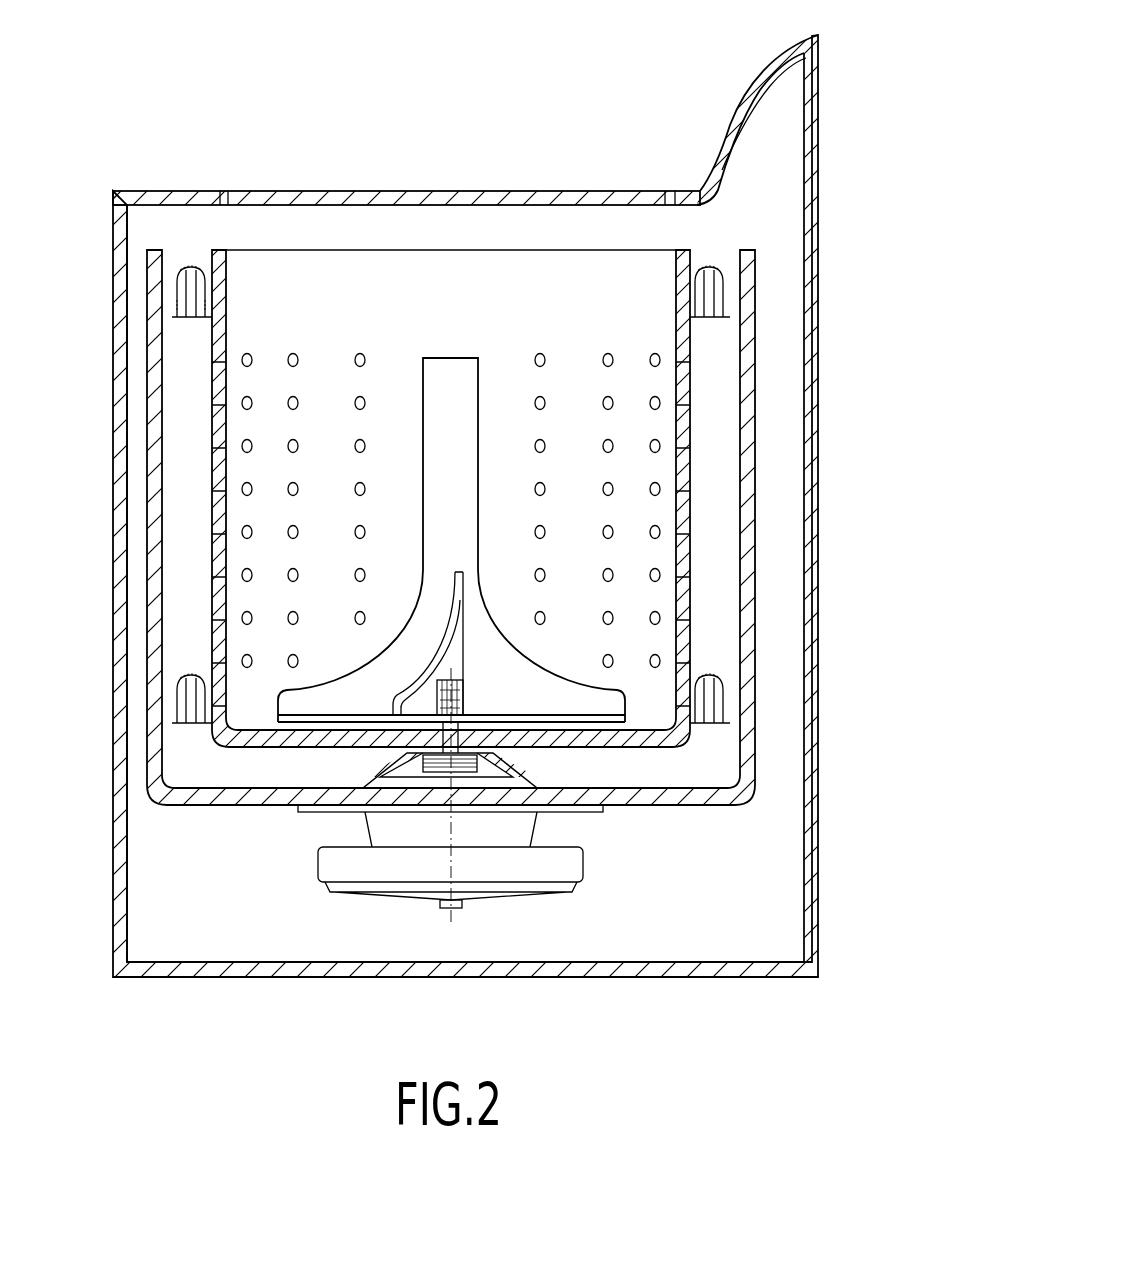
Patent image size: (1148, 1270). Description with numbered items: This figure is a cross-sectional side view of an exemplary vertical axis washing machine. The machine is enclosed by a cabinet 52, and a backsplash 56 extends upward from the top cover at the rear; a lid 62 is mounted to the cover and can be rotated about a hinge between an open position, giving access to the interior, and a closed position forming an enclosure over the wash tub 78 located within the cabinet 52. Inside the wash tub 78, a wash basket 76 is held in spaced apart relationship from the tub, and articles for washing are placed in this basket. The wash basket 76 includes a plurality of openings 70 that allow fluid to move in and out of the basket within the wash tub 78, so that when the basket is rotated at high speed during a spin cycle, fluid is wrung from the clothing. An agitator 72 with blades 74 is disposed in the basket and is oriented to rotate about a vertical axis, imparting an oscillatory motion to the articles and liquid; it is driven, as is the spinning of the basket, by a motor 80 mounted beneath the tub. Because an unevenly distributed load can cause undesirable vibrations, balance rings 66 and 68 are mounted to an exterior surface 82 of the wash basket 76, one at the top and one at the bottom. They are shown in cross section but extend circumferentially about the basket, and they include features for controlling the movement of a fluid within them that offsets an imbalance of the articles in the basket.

The cabinet 52 is at (813, 450).
The backsplash 56 is at (757, 78).
The lid 62 is at (338, 192).
The balance ring 66 is at (706, 268).
The balance ring 68 is at (720, 693).
The openings 70 is at (296, 352).
The agitator 72 is at (448, 370).
The blades 74 is at (522, 668).
The wash basket 76 is at (214, 259).
The wash tub 78 is at (188, 807).
The motor 80 is at (568, 871).
The exterior surface 82 is at (696, 381).